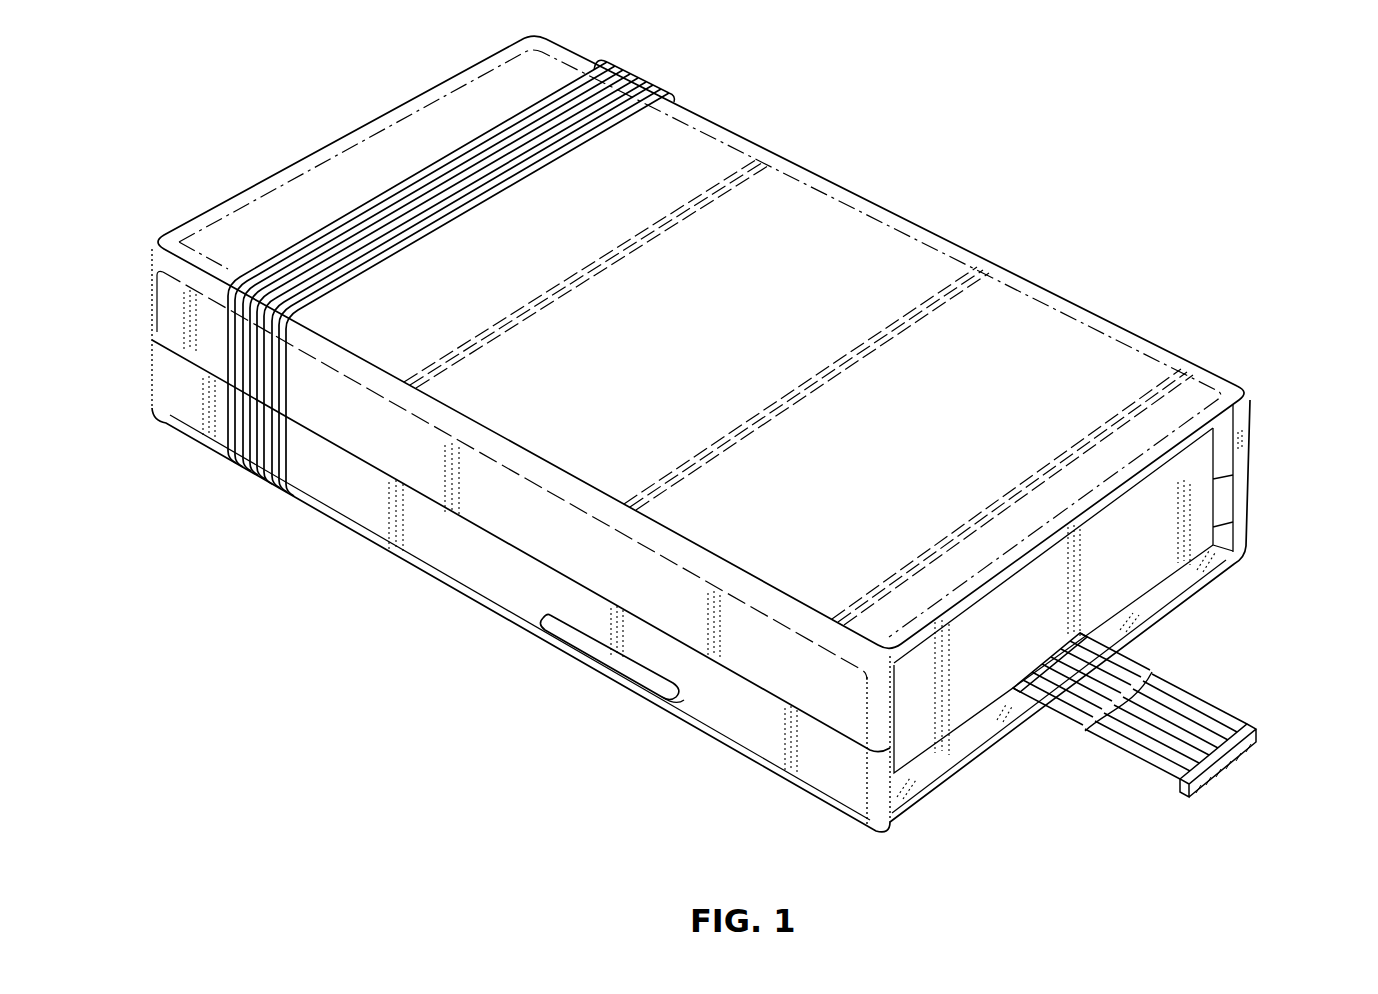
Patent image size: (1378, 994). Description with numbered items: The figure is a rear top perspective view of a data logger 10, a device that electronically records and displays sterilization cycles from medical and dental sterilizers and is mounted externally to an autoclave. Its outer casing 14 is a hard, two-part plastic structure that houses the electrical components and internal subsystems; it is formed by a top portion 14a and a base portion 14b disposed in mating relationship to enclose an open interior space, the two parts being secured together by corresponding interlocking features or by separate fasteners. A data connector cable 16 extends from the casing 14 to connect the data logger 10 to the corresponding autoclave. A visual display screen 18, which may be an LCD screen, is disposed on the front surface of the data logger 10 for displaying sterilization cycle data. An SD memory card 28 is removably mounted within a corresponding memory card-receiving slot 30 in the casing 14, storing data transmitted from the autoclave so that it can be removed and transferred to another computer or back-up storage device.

The data logger 10 is at (755, 445).
The casing 14 is at (1081, 305).
The top portion 14a is at (1253, 427).
The base portion 14b is at (1243, 520).
The data connector cable 16 is at (1140, 756).
The visual display screen 18 is at (262, 160).
The SD memory card 28 is at (663, 712).
The memory card-receiving slot 30 is at (680, 702).